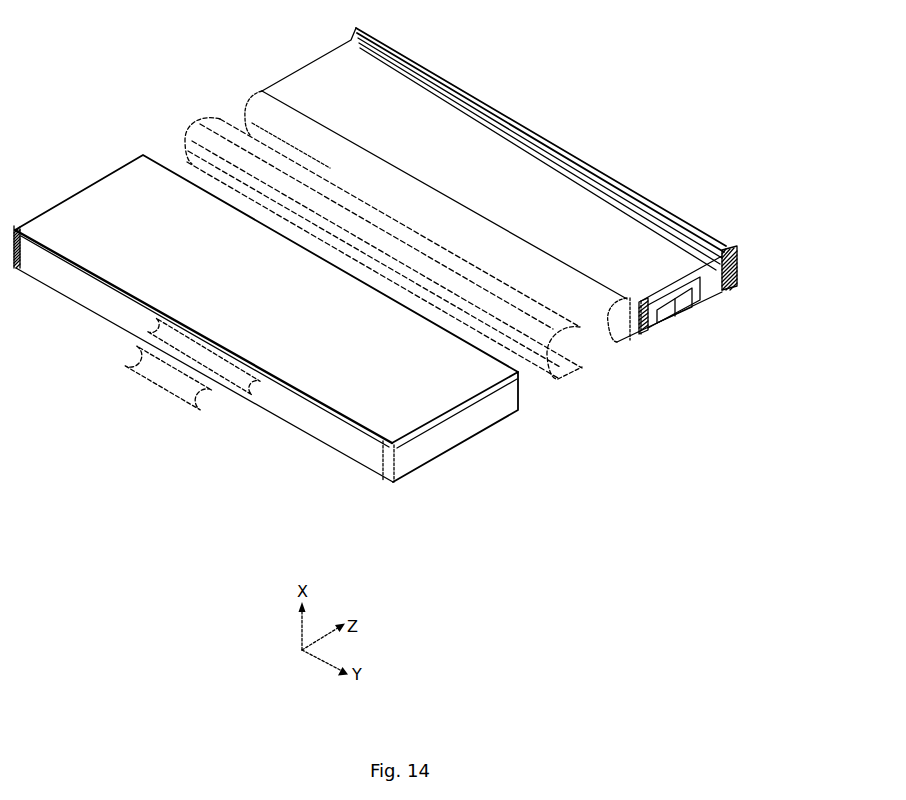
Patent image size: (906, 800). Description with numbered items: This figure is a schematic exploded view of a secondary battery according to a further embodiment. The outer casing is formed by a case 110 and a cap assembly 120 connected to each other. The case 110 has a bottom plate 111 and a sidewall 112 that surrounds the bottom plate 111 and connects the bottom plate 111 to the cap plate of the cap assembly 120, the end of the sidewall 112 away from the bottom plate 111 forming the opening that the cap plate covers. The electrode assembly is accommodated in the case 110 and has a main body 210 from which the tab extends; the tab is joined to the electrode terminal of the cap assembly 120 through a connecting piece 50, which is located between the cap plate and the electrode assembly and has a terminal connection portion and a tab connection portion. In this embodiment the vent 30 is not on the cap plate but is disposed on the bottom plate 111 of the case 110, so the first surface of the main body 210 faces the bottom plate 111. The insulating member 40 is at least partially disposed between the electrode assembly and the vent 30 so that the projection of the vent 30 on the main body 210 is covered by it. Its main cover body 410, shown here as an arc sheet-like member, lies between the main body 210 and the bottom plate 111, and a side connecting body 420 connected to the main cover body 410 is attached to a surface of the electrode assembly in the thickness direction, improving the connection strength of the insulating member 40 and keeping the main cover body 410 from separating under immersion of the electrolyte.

The vent 30 is at (157, 388).
The insulating member 40 is at (140, 72).
The connecting piece 50 is at (712, 288).
The case 110 is at (497, 525).
The bottom plate 111 is at (394, 483).
The sidewall 112 is at (443, 432).
The cap assembly 120 is at (746, 256).
The main body 210 is at (318, 73).
The main cover body 410 is at (197, 153).
The side connecting body 420 is at (213, 117).